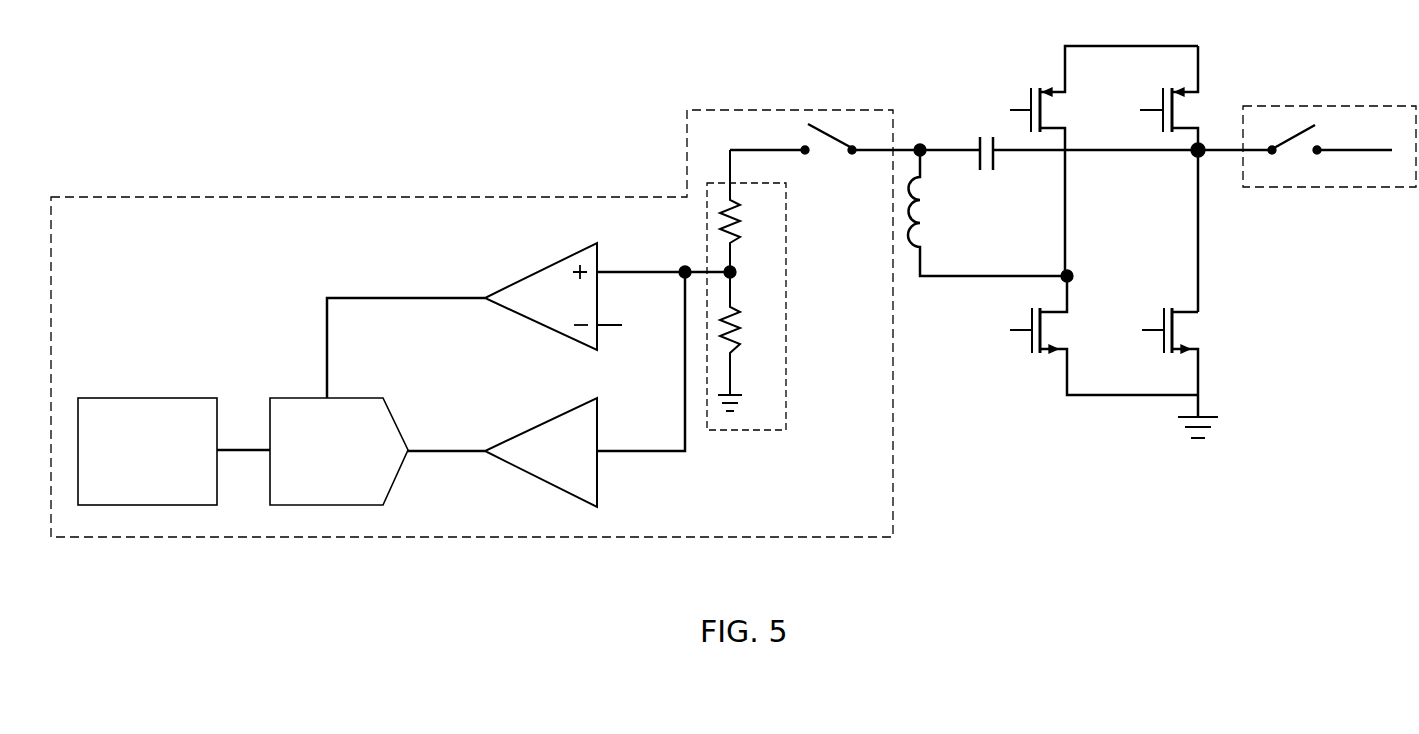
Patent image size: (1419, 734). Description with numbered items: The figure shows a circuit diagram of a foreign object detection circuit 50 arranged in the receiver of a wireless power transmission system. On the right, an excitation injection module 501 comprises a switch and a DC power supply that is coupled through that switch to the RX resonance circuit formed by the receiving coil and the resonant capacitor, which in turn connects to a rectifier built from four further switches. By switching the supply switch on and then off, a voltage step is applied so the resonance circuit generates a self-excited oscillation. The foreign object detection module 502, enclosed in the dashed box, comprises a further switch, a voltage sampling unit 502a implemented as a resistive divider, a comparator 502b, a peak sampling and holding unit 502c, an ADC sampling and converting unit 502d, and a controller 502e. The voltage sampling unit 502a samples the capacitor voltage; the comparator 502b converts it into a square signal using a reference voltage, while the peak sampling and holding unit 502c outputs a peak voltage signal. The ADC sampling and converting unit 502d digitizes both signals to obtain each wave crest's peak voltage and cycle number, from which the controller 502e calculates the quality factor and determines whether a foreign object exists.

The foreign object detection circuit 50 is at (530, 120).
The excitation injection module 501 is at (1322, 107).
The foreign object detection module 502 is at (443, 201).
The voltage sampling unit 502a is at (778, 294).
The comparator 502b is at (535, 281).
The peak sampling and holding unit 502c is at (546, 427).
The ADC sampling and converting unit 502d is at (300, 401).
The controller 502e is at (151, 401).